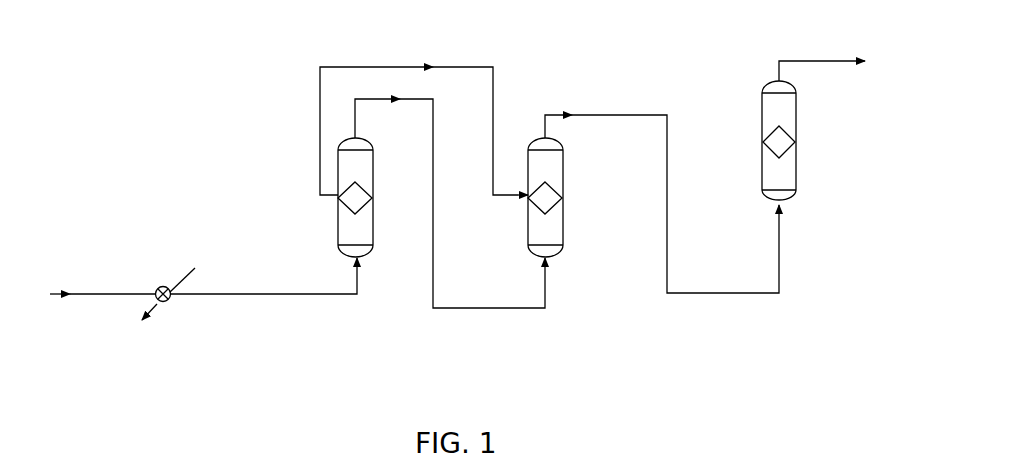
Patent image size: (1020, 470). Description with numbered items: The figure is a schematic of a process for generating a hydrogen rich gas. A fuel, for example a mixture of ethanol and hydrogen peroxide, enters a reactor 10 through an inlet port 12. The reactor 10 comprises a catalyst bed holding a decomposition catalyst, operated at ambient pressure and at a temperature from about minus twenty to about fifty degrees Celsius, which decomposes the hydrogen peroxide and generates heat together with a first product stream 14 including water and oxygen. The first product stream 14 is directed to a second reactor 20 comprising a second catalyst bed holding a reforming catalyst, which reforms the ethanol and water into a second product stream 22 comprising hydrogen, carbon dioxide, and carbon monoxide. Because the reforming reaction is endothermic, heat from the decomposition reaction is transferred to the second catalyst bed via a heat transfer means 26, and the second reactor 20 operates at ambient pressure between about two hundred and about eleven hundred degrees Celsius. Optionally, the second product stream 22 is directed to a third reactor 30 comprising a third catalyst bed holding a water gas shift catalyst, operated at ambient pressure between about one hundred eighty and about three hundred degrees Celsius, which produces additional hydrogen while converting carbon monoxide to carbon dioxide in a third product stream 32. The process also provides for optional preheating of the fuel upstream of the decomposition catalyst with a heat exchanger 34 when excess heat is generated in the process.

The reactor 10 is at (373, 170).
The inlet port 12 is at (355, 270).
The first product stream 14 is at (434, 244).
The second reactor 20 is at (564, 168).
The second product stream 22 is at (600, 115).
The heat transfer means 26 is at (372, 67).
The third reactor 30 is at (797, 146).
The third product stream 32 is at (812, 60).
The heat exchanger 34 is at (160, 287).